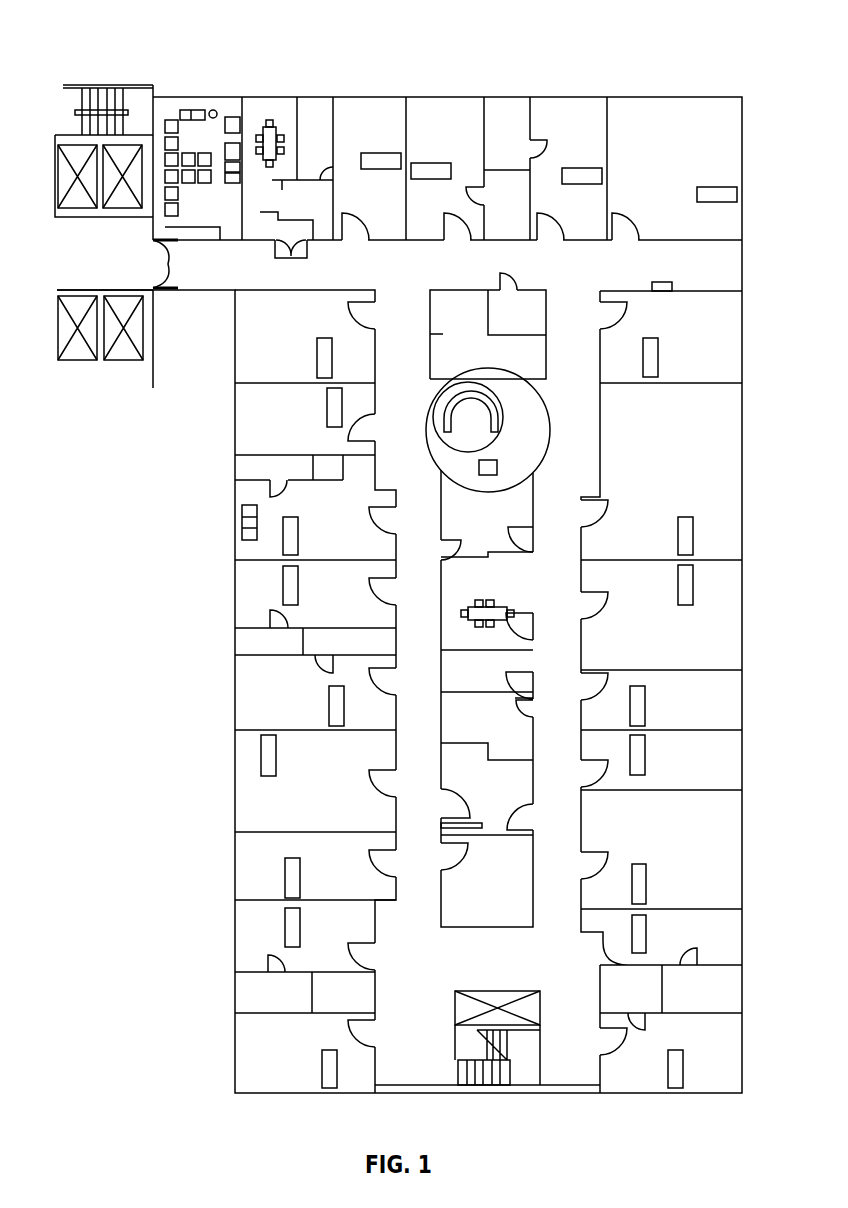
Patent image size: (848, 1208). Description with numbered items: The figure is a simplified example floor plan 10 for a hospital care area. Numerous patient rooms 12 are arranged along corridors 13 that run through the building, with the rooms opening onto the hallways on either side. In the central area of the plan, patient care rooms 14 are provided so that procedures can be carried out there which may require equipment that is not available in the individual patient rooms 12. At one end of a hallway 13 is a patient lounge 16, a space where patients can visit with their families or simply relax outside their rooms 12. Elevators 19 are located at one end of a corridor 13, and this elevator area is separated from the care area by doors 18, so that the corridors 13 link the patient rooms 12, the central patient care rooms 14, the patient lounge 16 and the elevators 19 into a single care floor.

The floor plan 10 is at (104, 42).
The patient rooms 12 is at (733, 340).
The corridors 13 is at (553, 267).
The patient care rooms 14 is at (497, 793).
The patient lounge 16 is at (241, 206).
The doors 18 is at (160, 262).
The elevators 19 is at (121, 355).